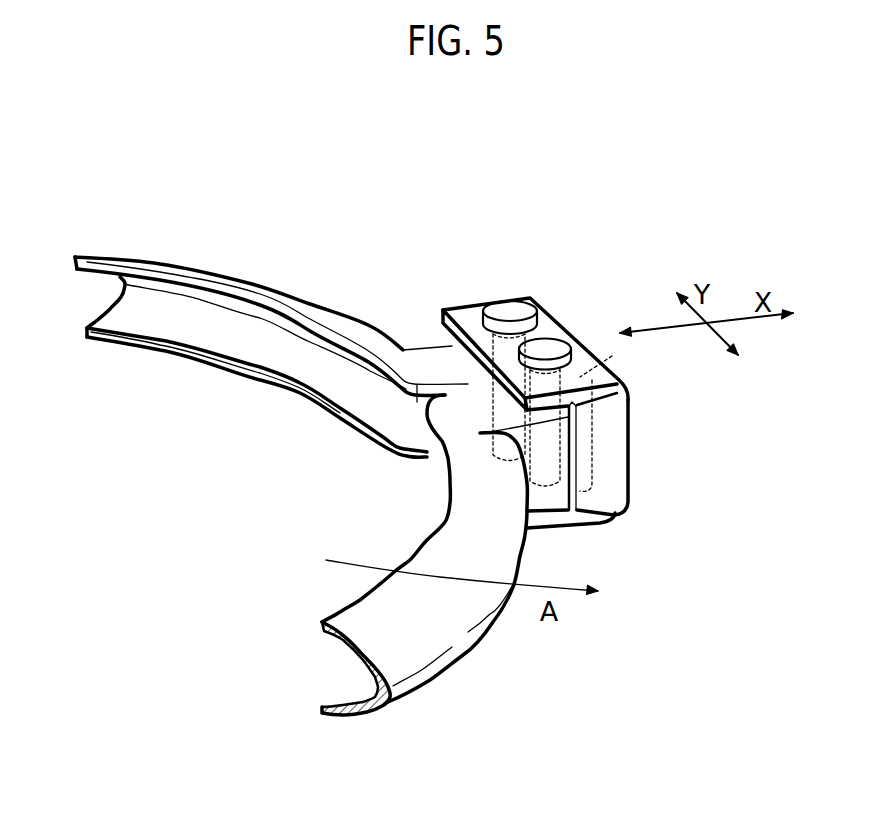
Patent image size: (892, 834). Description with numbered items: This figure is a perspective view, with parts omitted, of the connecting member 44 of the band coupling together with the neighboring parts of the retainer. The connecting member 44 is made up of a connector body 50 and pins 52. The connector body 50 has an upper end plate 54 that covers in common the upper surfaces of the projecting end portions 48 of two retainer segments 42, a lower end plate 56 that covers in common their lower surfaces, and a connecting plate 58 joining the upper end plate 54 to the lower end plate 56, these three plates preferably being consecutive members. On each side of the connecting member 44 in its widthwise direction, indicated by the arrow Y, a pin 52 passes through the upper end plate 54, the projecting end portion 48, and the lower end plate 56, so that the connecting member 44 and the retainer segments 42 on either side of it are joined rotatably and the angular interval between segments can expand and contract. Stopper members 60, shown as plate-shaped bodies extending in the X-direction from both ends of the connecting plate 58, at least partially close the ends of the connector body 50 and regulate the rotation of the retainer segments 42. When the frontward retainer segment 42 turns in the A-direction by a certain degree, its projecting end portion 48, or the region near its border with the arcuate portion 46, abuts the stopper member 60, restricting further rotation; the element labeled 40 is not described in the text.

The web of rail 40 is at (285, 337).
The retainer segment 42 is at (321, 458).
The connecting member 44 is at (551, 414).
The arcuate portion 46 is at (282, 303).
The projecting end portion 48 is at (447, 355).
The connector body 50 is at (598, 405).
The pin 52 is at (507, 311).
The upper end plate 54 is at (461, 313).
The lower end plate 56 is at (557, 528).
The connecting plate 58 is at (612, 356).
The stopper member 60 is at (587, 458).